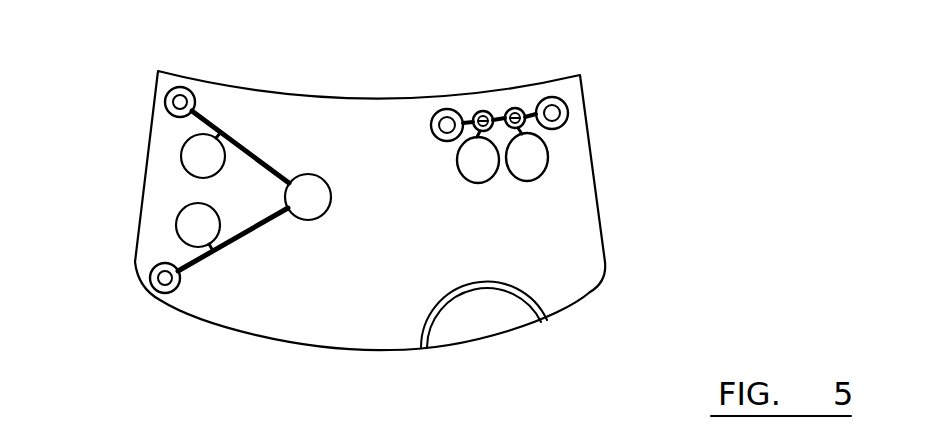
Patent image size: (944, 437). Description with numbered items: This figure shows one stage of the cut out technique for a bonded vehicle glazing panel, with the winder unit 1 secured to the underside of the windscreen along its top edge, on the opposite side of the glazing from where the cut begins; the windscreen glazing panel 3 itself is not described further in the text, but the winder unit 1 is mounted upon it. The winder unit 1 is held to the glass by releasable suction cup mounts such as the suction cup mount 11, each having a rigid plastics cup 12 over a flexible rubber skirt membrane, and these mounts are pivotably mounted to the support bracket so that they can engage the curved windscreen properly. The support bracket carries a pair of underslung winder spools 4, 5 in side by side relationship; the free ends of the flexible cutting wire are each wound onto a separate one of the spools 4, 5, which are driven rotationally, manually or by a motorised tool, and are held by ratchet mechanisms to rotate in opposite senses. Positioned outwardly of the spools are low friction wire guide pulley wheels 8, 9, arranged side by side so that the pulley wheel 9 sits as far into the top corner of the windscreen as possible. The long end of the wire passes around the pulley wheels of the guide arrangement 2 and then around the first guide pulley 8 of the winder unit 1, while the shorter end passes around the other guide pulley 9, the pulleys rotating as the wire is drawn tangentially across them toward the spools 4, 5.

The winder unit 1 is at (446, 181).
The guide arrangement 2 is at (249, 246).
The base plate 3 is at (272, 87).
The winder spool 4 is at (514, 108).
The winder spool 5 is at (481, 111).
The guide pulley wheel 8 is at (444, 110).
The guide pulley wheel 9 is at (552, 97).
The suction cup mount 11 is at (477, 171).
The rigid plastics cup 12 is at (533, 165).